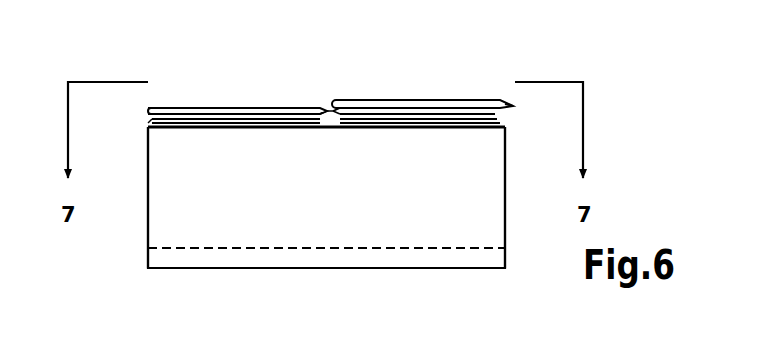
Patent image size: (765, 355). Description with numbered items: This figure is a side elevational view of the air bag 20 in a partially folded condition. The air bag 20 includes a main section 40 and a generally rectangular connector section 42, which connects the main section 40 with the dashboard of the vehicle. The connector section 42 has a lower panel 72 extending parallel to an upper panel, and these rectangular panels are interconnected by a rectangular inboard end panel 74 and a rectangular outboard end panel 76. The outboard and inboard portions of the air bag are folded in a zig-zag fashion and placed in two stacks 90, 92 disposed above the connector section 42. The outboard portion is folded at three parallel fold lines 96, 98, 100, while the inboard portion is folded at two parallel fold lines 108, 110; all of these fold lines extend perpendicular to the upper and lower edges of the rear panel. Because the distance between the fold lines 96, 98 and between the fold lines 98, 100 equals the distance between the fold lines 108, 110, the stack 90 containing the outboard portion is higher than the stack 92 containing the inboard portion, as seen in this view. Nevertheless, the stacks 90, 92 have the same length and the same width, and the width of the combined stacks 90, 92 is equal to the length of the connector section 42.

The air bag 20 is at (204, 74).
The main section 40 is at (330, 95).
The connector section 42 is at (262, 270).
The lower panel 72 is at (428, 223).
The inboard end panel 74 is at (148, 213).
The outboard end panel 76 is at (505, 223).
The stack 90 is at (400, 95).
The stack 92 is at (246, 102).
The fold line 96 is at (514, 110).
The fold line 98 is at (338, 128).
The fold line 100 is at (500, 128).
The fold line 108 is at (326, 128).
The fold line 110 is at (148, 123).